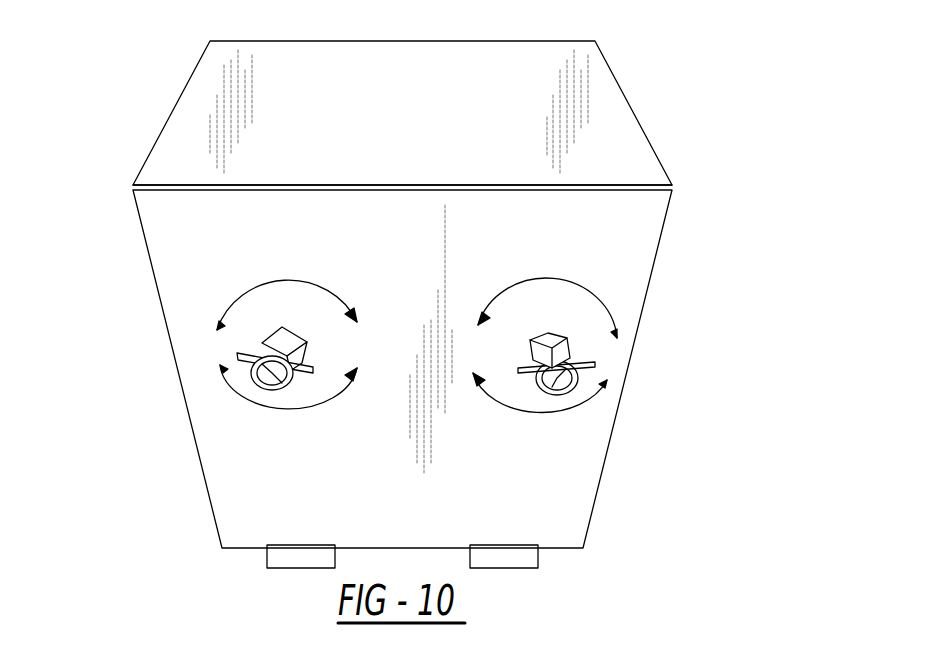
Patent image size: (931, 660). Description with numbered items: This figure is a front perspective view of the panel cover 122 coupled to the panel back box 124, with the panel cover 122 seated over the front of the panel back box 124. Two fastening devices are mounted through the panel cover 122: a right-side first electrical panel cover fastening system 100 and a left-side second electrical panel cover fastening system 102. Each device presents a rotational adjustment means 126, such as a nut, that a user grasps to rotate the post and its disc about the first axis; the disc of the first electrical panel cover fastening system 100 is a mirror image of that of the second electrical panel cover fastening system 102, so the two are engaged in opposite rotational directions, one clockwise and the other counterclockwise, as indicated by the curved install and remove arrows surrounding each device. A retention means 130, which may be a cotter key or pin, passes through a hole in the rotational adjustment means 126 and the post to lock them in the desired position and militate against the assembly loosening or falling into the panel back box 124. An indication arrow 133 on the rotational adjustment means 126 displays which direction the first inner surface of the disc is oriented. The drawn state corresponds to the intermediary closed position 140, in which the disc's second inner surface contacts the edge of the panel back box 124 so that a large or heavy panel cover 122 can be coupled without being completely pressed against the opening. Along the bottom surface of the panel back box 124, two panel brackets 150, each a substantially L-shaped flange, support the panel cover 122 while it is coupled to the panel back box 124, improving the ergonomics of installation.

The first electrical panel cover fastening system 100 is at (582, 350).
The second electrical panel cover fastening system 102 is at (250, 340).
The panel cover 122 is at (663, 240).
The panel back box 124 is at (168, 117).
The rotational adjustment means 126 is at (278, 332).
The retention means 130 is at (527, 367).
The indication arrow 133 is at (267, 363).
The intermediary closed position 140 is at (680, 92).
The panel bracket 150 is at (286, 568).